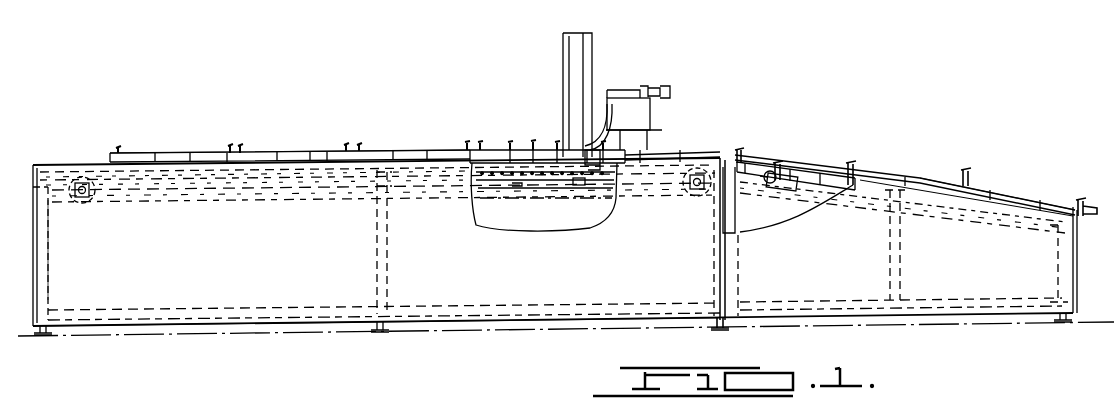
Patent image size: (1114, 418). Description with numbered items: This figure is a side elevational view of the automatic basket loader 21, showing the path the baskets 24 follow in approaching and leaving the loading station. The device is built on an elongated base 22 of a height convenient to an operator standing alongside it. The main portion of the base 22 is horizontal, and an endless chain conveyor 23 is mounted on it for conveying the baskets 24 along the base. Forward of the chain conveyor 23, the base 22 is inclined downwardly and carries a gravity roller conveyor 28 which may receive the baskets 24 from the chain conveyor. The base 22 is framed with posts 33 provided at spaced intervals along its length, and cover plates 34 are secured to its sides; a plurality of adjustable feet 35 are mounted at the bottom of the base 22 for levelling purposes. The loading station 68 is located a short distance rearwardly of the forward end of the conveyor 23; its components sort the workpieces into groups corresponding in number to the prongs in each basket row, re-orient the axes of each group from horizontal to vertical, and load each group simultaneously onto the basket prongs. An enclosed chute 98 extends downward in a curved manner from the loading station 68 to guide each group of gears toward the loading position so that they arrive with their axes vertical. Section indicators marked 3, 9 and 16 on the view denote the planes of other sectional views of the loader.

The section line 3- 3 is at (606, 23).
The section line 9- 9 is at (647, 127).
The section line 16- 16 is at (738, 153).
The automatic basket loader 21 is at (1024, 184).
The elongated base 22 is at (230, 322).
The endless chain conveyor 23 is at (520, 198).
The baskets 24 is at (252, 153).
The gravity roller conveyor 28 is at (815, 187).
The posts 33 is at (50, 264).
The cover plates 34 is at (248, 252).
The adjustable feet 35 is at (725, 330).
The loading station 68 is at (611, 74).
The enclosed chute 98 is at (645, 99).